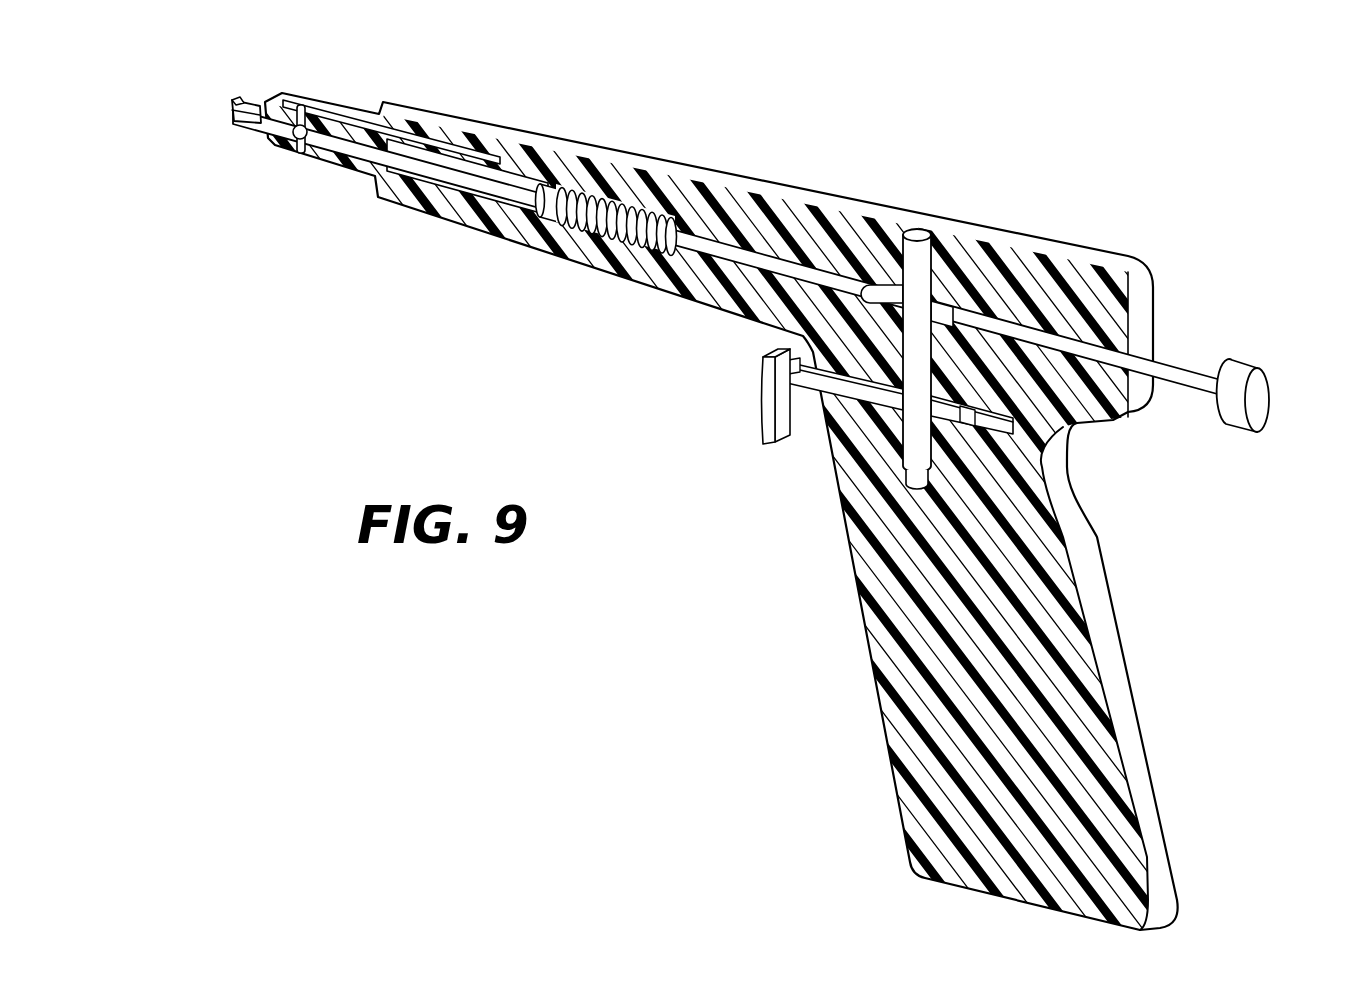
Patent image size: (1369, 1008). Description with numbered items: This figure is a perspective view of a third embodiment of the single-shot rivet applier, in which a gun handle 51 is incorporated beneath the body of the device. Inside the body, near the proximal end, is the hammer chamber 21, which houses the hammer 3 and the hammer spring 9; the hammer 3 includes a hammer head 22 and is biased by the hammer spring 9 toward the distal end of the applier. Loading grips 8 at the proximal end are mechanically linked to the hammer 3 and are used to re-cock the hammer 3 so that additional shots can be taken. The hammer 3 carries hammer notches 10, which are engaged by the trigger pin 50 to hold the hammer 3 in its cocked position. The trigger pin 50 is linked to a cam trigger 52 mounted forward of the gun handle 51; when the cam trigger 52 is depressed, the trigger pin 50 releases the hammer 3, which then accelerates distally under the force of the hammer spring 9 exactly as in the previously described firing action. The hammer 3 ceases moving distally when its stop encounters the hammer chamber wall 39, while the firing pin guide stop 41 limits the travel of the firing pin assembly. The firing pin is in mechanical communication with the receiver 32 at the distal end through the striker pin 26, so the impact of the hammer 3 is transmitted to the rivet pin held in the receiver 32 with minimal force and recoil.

The hammer 3 is at (553, 190).
The loading grips 8 is at (1263, 393).
The hammer spring 9 is at (628, 195).
The hammer notches 10 is at (867, 283).
The hammer chamber 21 is at (525, 178).
The hammer head 22 is at (527, 220).
The striker pin 26 is at (233, 118).
The receiver 32 is at (237, 101).
The hammer chamber wall 39 is at (493, 170).
The firing pin guide stop 41 is at (295, 147).
The trigger pin 50 is at (927, 273).
The gun handle 51 is at (897, 716).
The cam trigger 52 is at (760, 427).